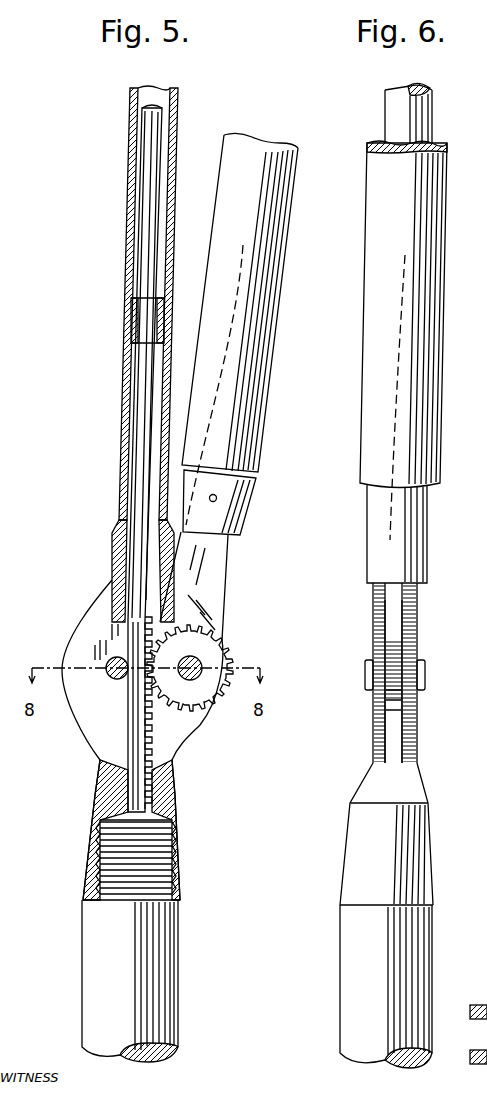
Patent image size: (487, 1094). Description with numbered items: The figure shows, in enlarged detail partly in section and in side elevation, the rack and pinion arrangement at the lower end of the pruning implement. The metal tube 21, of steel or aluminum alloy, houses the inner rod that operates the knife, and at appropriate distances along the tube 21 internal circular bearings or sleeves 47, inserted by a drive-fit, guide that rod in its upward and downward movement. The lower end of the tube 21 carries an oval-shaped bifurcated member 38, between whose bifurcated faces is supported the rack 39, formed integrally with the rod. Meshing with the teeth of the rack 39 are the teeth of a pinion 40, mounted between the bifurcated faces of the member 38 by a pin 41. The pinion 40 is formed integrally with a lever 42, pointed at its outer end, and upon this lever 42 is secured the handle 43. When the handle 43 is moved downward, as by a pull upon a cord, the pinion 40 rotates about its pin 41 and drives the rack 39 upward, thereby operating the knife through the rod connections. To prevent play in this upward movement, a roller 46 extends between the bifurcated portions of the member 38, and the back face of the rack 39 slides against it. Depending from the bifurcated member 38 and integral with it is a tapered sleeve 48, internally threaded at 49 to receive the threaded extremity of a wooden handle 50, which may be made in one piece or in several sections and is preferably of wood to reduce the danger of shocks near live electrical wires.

In FIG. 5, the metal tube 21 is at (128, 212).
In FIG. 6, the metal tube 21 is at (422, 121).
In FIG. 5, the bifurcated member 38 is at (95, 622).
In FIG. 6, the bifurcated member 38 is at (413, 636).
In FIG. 5, the rack 39 is at (130, 718).
In FIG. 6, the rack 39 is at (403, 736).
In FIG. 5, the pinion 40 is at (232, 662).
In FIG. 6, the pinion 40 is at (382, 698).
In FIG. 5, the pin 41 is at (197, 678).
In FIG. 6, the pin 41 is at (419, 682).
In FIG. 5, the lever 42 is at (218, 576).
In FIG. 6, the lever 42 is at (397, 606).
In FIG. 5, the handle 43 is at (288, 218).
In FIG. 6, the handle 43 is at (440, 219).
In FIG. 5, the roller 46 is at (108, 676).
In FIG. 5, the internal circular bearings or sleeves 47 is at (130, 325).
In FIG. 5, the tapered sleeve 48 is at (97, 810).
In FIG. 6, the tapered sleeve 48 is at (422, 852).
In FIG. 5, the internal threads 49 is at (97, 858).
In FIG. 5, the wooden handle 50 is at (95, 962).
In FIG. 6, the wooden handle 50 is at (352, 975).